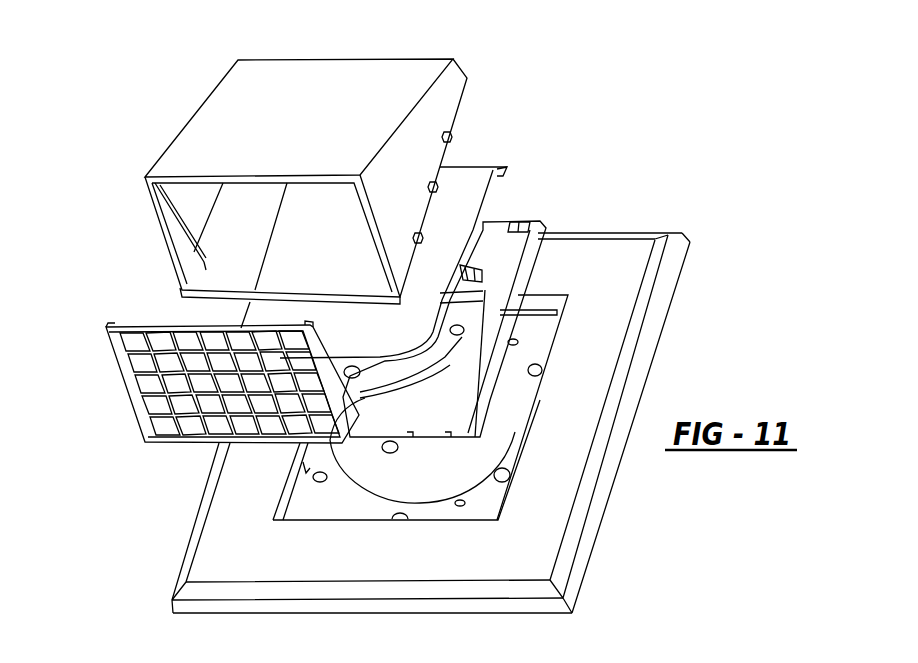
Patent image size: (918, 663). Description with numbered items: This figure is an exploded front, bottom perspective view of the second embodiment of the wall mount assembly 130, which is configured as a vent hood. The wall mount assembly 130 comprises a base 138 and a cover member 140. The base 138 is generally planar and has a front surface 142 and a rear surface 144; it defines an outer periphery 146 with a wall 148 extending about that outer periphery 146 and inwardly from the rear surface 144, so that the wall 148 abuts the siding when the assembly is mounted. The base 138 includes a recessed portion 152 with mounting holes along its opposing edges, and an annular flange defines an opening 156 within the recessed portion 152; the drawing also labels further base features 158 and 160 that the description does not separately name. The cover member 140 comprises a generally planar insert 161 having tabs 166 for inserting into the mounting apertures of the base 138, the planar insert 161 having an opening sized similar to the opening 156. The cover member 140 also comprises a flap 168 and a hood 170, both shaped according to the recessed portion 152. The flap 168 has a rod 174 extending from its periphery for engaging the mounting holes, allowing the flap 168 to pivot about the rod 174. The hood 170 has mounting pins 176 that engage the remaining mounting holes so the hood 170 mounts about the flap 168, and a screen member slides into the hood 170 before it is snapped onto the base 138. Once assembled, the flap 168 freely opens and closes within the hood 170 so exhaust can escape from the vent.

The wall mount assembly 130 is at (166, 65).
The cover member 140 is at (149, 256).
The hood 170 is at (366, 78).
The mounting pins 176 is at (437, 187).
The rod 174 is at (505, 172).
The flap 168 is at (470, 188).
The planar insert 161 is at (490, 228).
The tabs 166 is at (432, 437).
The base plate 158 is at (346, 501).
The mounting holes 160 is at (317, 478).
The recessed portion 152 is at (510, 455).
The rear surface 144 is at (728, 661).
The opening 156 is at (477, 472).
The wall 148 is at (645, 365).
The outer periphery 146 is at (608, 307).
The front surface 142 is at (613, 265).
The base 138 is at (640, 262).